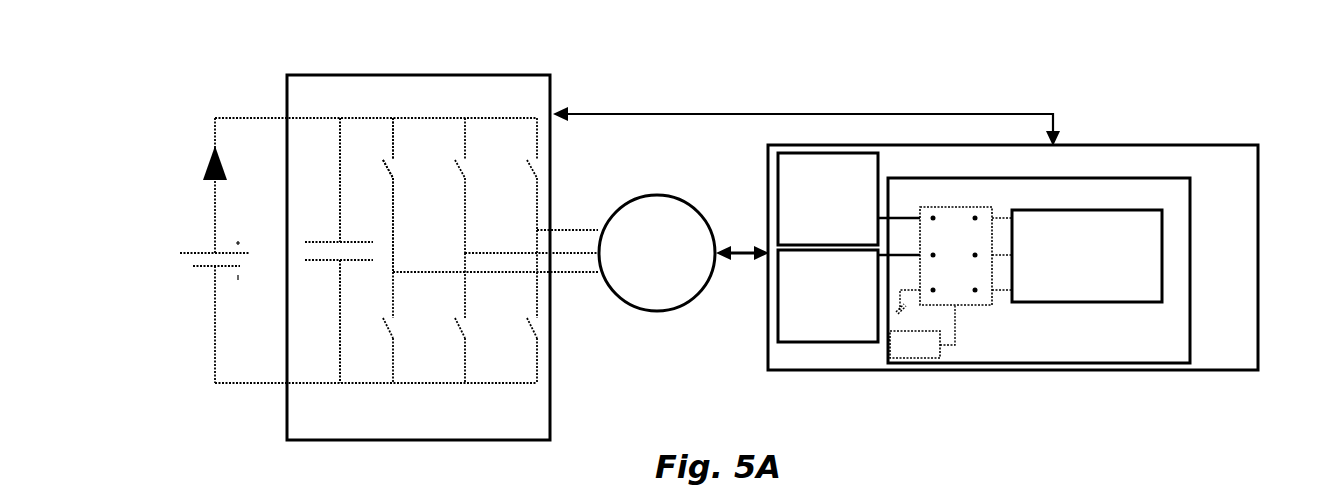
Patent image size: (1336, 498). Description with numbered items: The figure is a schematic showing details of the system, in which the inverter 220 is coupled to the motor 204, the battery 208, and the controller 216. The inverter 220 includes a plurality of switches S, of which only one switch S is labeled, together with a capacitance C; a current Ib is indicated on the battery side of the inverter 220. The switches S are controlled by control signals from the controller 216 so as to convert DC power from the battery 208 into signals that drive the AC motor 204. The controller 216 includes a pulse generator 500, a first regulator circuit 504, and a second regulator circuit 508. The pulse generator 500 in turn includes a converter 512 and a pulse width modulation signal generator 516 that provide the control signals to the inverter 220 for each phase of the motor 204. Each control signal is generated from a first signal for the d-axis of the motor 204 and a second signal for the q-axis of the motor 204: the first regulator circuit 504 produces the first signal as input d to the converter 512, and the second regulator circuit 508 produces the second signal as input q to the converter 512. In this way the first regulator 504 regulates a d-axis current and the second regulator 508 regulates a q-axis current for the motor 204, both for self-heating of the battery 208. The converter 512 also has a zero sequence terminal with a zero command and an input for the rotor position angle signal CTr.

The pulse generator 500 is at (1106, 324).
The first regulator circuit 504 is at (828, 199).
The second regulator circuit 508 is at (828, 296).
The converter 512 is at (977, 308).
The pulse width modulation signal generator 516 is at (1112, 302).
The controller 216 is at (1051, 308).
The inverter 220 is at (406, 257).
The motor 204 is at (676, 313).
The battery 208 is at (203, 273).
The capacitance C is at (337, 268).
The switch S is at (384, 148).
The battery current Ib is at (194, 166).